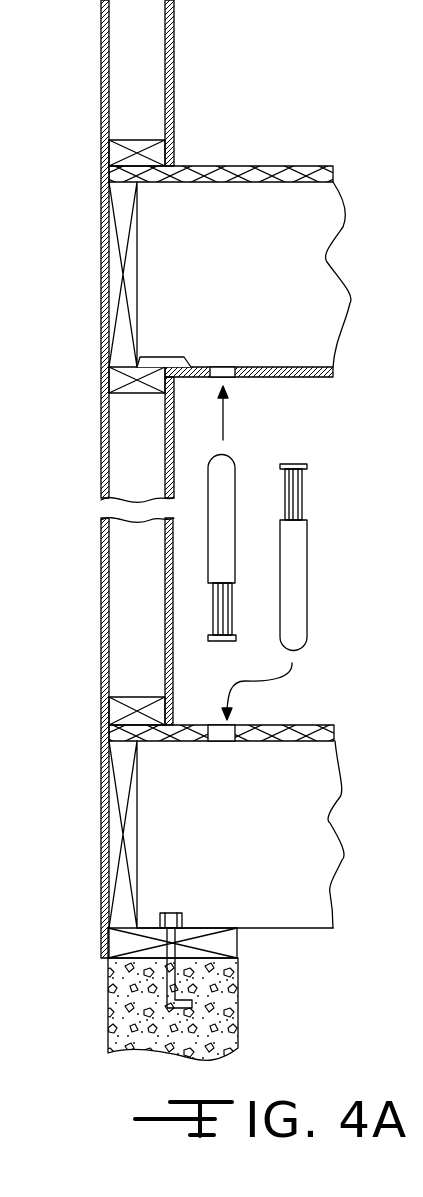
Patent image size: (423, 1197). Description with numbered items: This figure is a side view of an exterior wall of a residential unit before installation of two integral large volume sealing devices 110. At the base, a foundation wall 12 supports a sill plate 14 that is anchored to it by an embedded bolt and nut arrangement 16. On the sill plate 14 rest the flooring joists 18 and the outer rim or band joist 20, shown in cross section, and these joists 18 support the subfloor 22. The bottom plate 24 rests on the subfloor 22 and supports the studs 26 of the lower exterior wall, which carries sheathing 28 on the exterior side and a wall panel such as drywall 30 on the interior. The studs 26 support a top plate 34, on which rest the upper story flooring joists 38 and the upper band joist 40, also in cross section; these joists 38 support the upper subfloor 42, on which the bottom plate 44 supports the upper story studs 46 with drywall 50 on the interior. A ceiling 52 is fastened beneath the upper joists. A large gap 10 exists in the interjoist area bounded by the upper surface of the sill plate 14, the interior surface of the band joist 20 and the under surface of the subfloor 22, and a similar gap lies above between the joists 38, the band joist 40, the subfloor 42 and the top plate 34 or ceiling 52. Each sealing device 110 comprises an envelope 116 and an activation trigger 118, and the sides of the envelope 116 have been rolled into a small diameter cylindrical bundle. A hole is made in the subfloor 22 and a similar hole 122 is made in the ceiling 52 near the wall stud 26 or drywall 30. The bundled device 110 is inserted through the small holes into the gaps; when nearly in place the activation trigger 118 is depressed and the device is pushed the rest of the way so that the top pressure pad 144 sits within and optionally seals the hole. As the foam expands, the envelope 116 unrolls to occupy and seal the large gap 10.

The large gap 10 is at (272, 895).
The foundation wall 12 is at (213, 1003).
The sill plate 14 is at (118, 945).
The embedded bolt and nut arrangement 16 is at (207, 948).
The flooring joist 18 is at (258, 880).
The band joist 20 is at (107, 840).
The subfloor 22 is at (292, 728).
The bottom plate 24 is at (115, 711).
The studs 26 is at (143, 574).
The sheathing 28 is at (100, 540).
The drywall 30 is at (175, 672).
The top plate 34 is at (117, 377).
The upper story flooring joist 38 is at (240, 262).
The band joist 40 is at (112, 280).
The subfloor 42 is at (233, 166).
The bottom plate 44 is at (118, 155).
The studs 46 is at (143, 62).
The drywall 50 is at (178, 45).
The ceiling 52 is at (263, 380).
The integral large volume sealing device 110 is at (312, 553).
The envelope 116 is at (297, 568).
The activation trigger 118 is at (303, 490).
The hole 122 is at (222, 370).
The pressure pad 144 is at (211, 745).